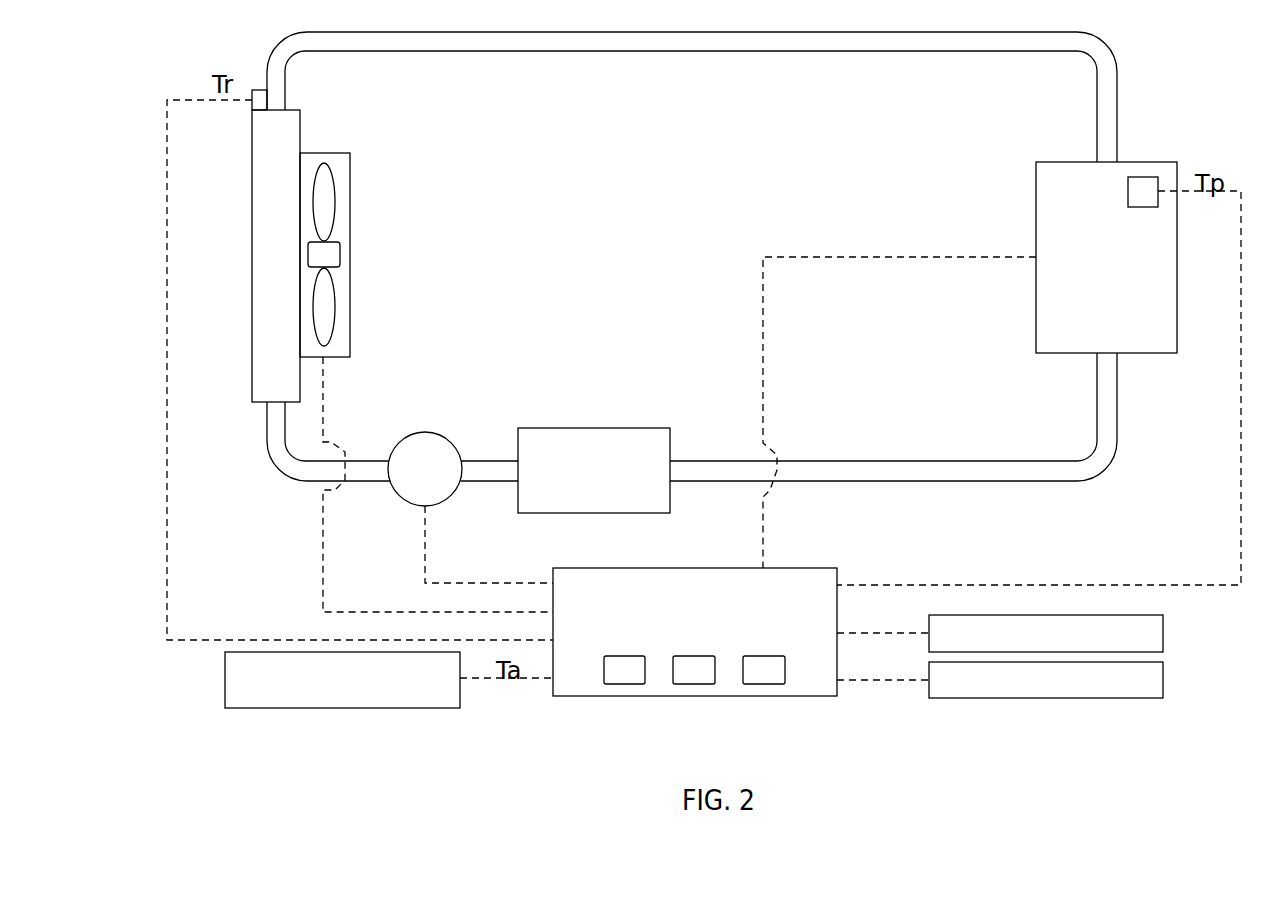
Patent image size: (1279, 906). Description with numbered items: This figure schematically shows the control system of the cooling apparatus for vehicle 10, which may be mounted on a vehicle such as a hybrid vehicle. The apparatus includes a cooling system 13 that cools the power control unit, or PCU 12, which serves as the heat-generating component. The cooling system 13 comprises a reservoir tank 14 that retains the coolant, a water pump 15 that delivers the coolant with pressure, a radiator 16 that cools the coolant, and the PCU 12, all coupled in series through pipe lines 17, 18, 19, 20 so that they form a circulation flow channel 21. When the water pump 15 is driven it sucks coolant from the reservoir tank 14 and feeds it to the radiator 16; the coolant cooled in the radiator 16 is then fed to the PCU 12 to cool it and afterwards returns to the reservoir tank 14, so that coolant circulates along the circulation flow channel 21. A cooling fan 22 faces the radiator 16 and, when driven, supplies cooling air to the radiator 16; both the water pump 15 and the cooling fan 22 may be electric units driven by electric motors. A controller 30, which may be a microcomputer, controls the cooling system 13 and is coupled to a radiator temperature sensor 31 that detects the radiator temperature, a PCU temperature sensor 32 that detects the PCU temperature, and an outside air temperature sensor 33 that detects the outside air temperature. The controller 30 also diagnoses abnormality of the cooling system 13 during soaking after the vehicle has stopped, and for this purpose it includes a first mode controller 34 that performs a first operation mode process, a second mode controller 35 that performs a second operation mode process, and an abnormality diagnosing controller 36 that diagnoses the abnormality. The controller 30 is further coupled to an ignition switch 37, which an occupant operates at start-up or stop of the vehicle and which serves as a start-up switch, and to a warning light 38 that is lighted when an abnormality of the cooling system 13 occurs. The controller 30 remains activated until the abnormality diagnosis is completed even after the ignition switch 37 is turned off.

The cooling apparatus for vehicle 10 is at (1194, 44).
The power control unit (PCU) 12 is at (1063, 161).
The cooling system 13 is at (1138, 113).
The reservoir tank 14 is at (594, 428).
The water pump 15 is at (425, 432).
The radiator 16 is at (251, 222).
The pipe line 17 is at (480, 459).
The pipe line 18 is at (266, 442).
The pipe line 19 is at (645, 53).
The pipe line 20 is at (880, 460).
The circulation flow channel 21 is at (505, 66).
The cooling fan 22 is at (351, 221).
The controller 30 is at (795, 568).
The radiator temperature sensor 31 is at (258, 88).
The PCU temperature sensor 32 is at (1128, 190).
The outside air temperature sensor 33 is at (224, 677).
The first mode controller 34 is at (628, 656).
The second mode controller 35 is at (698, 656).
The abnormality diagnosing controller 36 is at (768, 656).
The ignition switch 37 is at (1165, 630).
The warning light 38 is at (1165, 676).